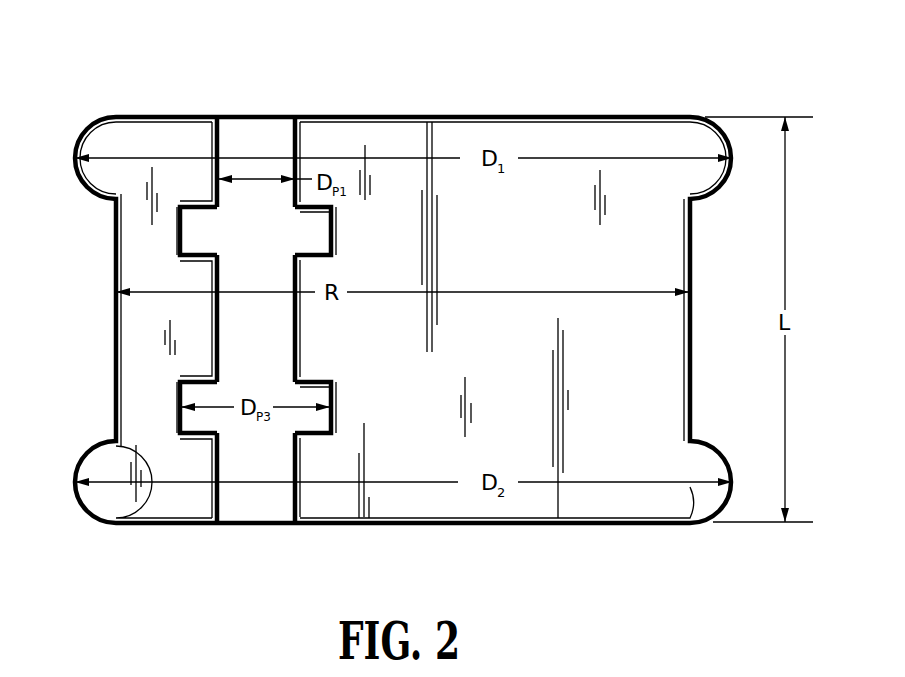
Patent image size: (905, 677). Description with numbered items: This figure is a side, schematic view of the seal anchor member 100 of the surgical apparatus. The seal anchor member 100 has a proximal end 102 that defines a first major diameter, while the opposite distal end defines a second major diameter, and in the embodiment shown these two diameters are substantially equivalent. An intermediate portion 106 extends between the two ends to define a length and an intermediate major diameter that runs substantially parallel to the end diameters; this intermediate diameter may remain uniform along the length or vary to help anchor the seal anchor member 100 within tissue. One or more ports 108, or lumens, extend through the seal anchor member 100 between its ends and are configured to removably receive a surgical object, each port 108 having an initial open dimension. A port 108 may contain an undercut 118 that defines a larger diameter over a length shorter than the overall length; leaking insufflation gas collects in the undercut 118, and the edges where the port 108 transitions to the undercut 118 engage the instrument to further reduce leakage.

The seal anchor member 100 is at (516, 94).
The proximal end 102 is at (115, 133).
The intermediate portion 106 is at (138, 272).
The port 108 is at (248, 132).
The undercut 118 is at (314, 392).